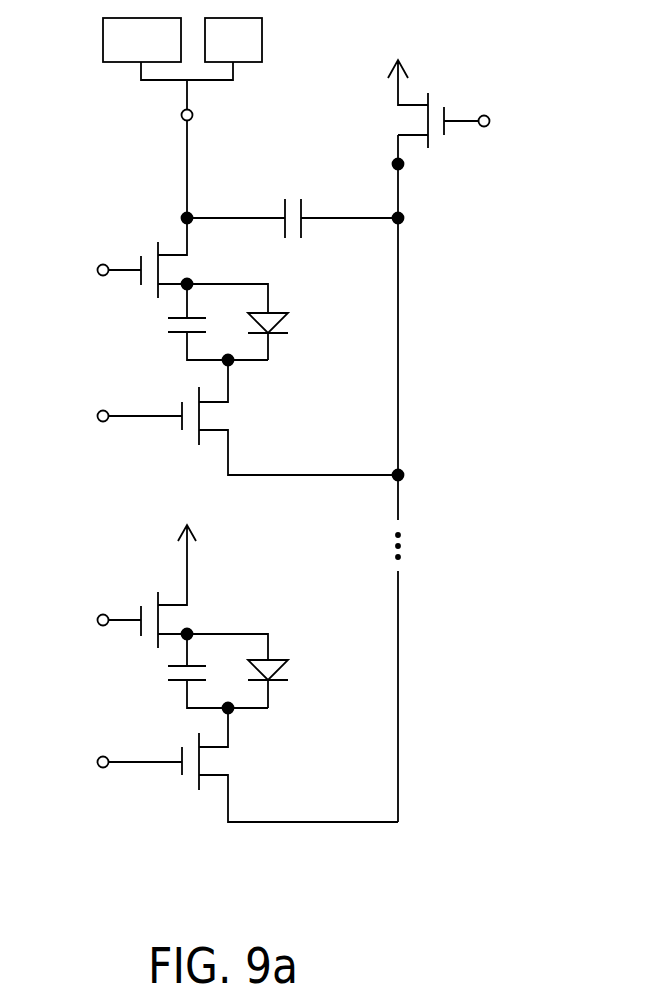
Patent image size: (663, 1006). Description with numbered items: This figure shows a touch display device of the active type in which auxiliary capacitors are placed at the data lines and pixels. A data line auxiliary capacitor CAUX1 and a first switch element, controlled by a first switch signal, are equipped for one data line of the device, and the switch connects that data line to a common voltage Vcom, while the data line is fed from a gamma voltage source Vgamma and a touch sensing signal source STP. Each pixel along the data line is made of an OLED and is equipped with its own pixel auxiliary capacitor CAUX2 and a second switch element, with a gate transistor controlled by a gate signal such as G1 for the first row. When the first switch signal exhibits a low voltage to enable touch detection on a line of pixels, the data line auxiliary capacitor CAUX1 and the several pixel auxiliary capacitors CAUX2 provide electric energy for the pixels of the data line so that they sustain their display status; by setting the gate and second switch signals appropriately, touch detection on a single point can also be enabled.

The gamma voltage source Vgamma is at (145, 49).
The touch sensing signal source STP is at (224, 49).
The common voltage Vcom is at (401, 65).
The data line auxiliary capacitor CAUX1 is at (292, 201).
The gate signal G1 is at (117, 258).
The pixel auxiliary capacitor CAUX2 is at (185, 499).